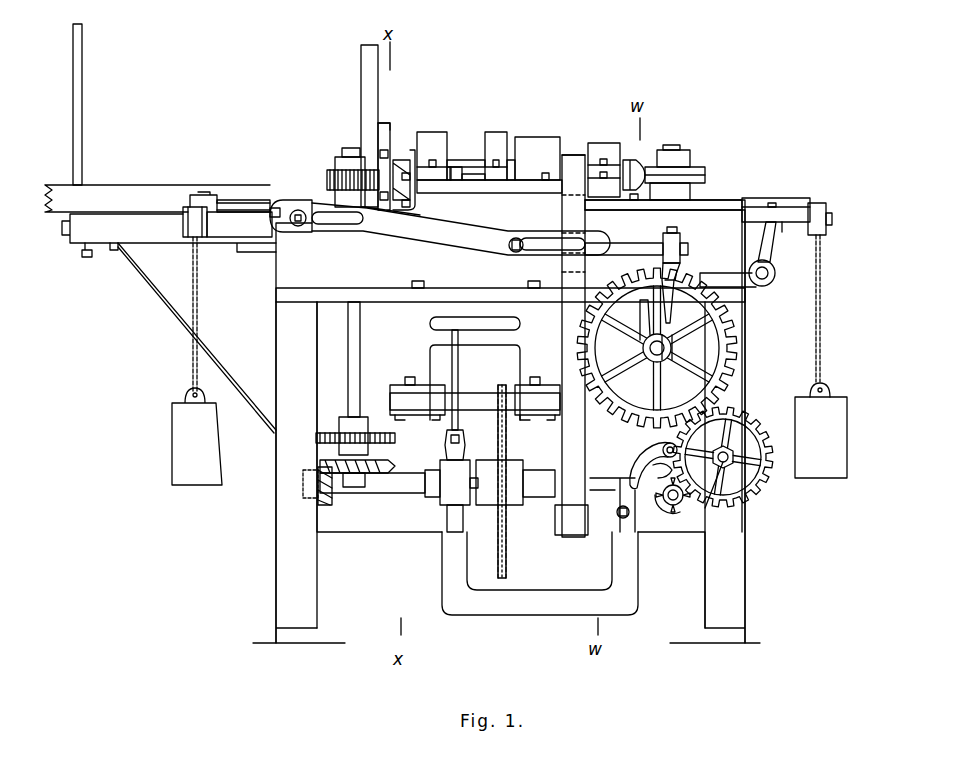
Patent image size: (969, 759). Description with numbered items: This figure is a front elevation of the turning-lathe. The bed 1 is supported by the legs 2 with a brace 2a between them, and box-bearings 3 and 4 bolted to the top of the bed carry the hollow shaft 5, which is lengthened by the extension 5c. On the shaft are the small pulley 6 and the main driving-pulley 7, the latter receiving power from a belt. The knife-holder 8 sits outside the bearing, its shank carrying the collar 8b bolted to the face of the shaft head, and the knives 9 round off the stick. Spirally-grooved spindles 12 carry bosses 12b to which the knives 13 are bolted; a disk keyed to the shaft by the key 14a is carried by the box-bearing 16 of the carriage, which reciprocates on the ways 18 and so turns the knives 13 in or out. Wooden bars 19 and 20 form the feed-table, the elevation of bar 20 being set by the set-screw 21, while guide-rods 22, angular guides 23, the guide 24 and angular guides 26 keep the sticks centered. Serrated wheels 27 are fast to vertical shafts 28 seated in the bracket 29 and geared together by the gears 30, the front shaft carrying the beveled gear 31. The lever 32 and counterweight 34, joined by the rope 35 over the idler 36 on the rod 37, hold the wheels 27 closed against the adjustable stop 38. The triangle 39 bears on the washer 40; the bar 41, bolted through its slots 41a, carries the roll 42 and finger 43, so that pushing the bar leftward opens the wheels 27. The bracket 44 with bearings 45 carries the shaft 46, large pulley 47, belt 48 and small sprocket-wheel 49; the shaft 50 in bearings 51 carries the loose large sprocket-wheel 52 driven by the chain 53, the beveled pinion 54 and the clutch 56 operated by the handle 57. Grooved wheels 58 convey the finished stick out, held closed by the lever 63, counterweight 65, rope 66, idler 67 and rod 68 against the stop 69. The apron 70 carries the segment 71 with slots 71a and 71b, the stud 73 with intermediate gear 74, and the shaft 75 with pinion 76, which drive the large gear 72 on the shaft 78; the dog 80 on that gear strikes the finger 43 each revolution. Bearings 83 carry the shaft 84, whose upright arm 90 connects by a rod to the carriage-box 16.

The bed 1 is at (310, 255).
The legs 2 is at (510, 426).
The brace 2a is at (540, 573).
The box-bearing 3 is at (432, 156).
The box-bearing 4 is at (600, 145).
The hollow shaft 5 is at (470, 162).
The extension 5c is at (634, 161).
The small pulley 6 is at (575, 156).
The main driving-pulley 7 is at (537, 158).
The knife-holder 8 is at (401, 180).
The collar 8b is at (412, 150).
The knives 9 is at (404, 172).
The spindles 12 is at (474, 182).
The boss 12b is at (449, 182).
The knives 13 is at (455, 167).
The key 14a is at (511, 160).
The box-bearing 16 is at (495, 156).
The ways 18 is at (525, 190).
The wooden bar 19 is at (169, 233).
The wooden bar 20 is at (157, 198).
The set-screw 21 is at (85, 257).
The guide-rods 22 is at (82, 107).
The angular guides 23 is at (388, 210).
The guide 24 is at (385, 123).
The angular guides 26 is at (362, 87).
The serrated wheels 27 is at (327, 178).
The vertical shafts 28 is at (348, 343).
The bracket 29 is at (368, 487).
The gears 30 is at (330, 432).
The beveled gear 31 is at (392, 468).
The lever 32 is at (246, 205).
The counterweight 34 is at (197, 436).
The rope 35 is at (196, 313).
The idler 36 is at (180, 240).
The rod 37 is at (222, 238).
The adjustable stop 38 is at (302, 228).
The triangle 39 is at (222, 202).
The washer 40 is at (208, 194).
The bar 41 is at (461, 229).
The slots 41a is at (540, 255).
The roll 42 is at (276, 206).
The finger 43 is at (673, 312).
The bracket 44 is at (431, 347).
The bearings 45 is at (416, 416).
The shaft 46 is at (468, 398).
The large pulley 47 is at (560, 536).
The belt 48 is at (573, 346).
The small sprocket-wheel 49 is at (500, 385).
The shaft 50 is at (543, 490).
The bearings 51 is at (616, 472).
The large sprocket-wheel 52 is at (515, 464).
The chain 53 is at (497, 445).
The beveled pinion 54 is at (328, 500).
The clutch 56 is at (458, 505).
The handle 57 is at (450, 436).
The grooved wheels 58 is at (705, 172).
The lever 63 is at (793, 198).
The counterweight 65 is at (821, 430).
The rope 66 is at (821, 320).
The idler 67 is at (826, 230).
The rod 68 is at (782, 232).
The stop 69 is at (735, 200).
The apron 70 is at (666, 348).
The segment 71 is at (655, 450).
The slot 71a is at (640, 448).
The slot 71b is at (721, 495).
The large gear 72 is at (735, 352).
The stud 73 is at (728, 452).
The intermediate gear 74 is at (765, 478).
The shaft 75 is at (690, 500).
The pinion 76 is at (663, 505).
The shaft 78 is at (650, 364).
The dog 80 is at (643, 338).
The bearings 83 is at (752, 288).
The shaft 84 is at (774, 278).
The arm 90 is at (770, 252).